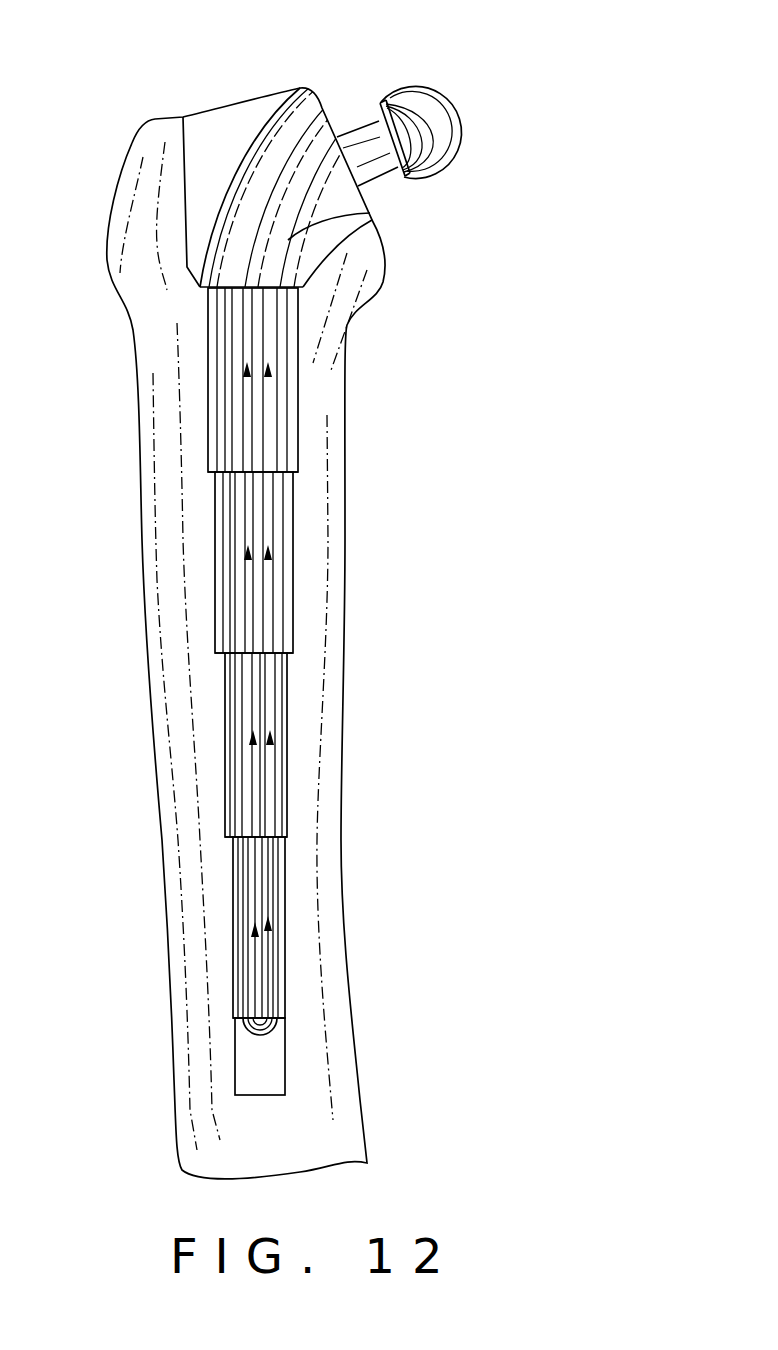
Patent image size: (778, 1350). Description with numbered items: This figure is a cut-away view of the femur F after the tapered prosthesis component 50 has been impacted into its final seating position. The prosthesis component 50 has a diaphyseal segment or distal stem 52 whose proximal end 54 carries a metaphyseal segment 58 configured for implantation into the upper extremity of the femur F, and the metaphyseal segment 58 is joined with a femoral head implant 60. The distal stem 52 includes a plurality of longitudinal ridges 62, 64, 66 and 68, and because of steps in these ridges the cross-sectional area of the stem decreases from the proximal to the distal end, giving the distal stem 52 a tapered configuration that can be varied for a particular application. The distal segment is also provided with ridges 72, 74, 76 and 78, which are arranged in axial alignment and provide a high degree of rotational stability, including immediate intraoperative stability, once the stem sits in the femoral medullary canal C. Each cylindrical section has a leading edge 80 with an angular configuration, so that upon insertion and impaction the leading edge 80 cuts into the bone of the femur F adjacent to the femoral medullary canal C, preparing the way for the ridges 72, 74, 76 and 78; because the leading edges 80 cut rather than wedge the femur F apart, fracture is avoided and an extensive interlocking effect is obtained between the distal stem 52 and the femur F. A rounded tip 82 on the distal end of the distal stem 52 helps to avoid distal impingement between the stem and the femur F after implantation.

The prosthesis component 50 is at (343, 118).
The distal stem 52 is at (302, 345).
The proximal end 54 is at (197, 277).
The metaphyseal segment 58 is at (252, 163).
The femoral head implant 60 is at (446, 116).
The longitudinal ridge 62 is at (298, 440).
The longitudinal ridge 64 is at (294, 572).
The longitudinal ridge 66 is at (288, 760).
The longitudinal ridge 68 is at (286, 913).
The ridge 72 is at (268, 376).
The ridge 74 is at (268, 559).
The ridge 76 is at (270, 744).
The ridge 78 is at (268, 930).
The leading edge 80 is at (213, 474).
The rounded tip 82 is at (250, 1032).
The femur F is at (315, 665).
The femoral medullary canal C is at (268, 1066).